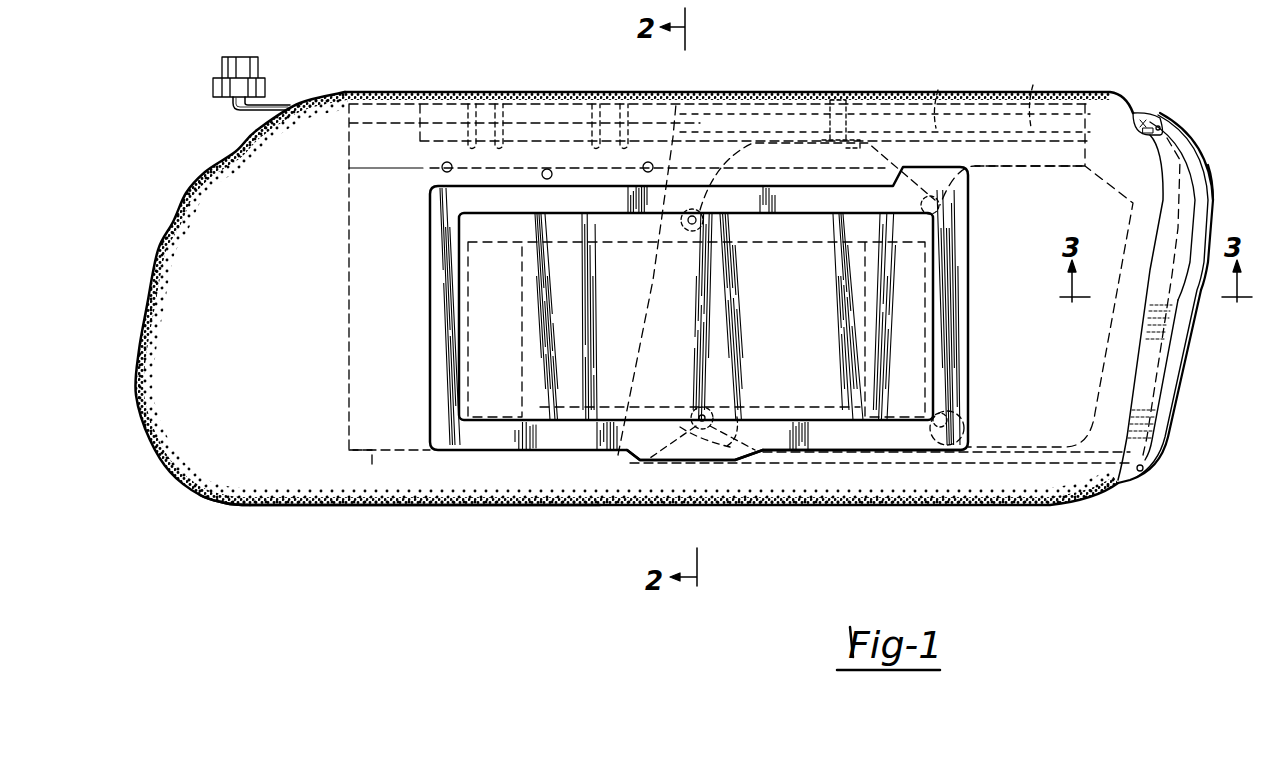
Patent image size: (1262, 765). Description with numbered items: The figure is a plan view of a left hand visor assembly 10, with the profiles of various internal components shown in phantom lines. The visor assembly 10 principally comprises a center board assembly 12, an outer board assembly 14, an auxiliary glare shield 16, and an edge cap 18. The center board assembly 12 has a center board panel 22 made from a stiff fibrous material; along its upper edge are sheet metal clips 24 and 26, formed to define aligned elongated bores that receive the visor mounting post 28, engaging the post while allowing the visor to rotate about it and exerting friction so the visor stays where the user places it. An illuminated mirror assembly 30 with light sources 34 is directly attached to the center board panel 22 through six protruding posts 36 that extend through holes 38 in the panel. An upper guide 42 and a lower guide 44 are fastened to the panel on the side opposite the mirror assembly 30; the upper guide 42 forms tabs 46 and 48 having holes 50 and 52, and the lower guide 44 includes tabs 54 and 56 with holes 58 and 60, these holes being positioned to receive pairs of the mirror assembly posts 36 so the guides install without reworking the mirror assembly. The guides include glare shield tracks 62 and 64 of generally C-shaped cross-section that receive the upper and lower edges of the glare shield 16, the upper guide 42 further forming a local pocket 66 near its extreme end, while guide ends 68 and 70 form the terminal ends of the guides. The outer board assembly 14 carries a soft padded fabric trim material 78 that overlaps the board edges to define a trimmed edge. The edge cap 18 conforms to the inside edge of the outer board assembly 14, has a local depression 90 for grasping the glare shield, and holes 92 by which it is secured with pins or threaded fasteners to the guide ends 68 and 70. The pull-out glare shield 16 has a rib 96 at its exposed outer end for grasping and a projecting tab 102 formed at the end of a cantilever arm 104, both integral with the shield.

The visor assembly 10 is at (880, 70).
The center board assembly 12 is at (407, 452).
The outer board assembly 14 is at (315, 508).
The auxiliary glare shield 16 is at (1182, 358).
The edge cap 18 is at (1177, 128).
The center board panel 22 is at (373, 470).
The sheet metal clip 24 is at (528, 91).
The sheet metal clip 26 is at (763, 58).
The visor mounting post 28 is at (287, 106).
The illuminated mirror assembly 30 is at (515, 452).
The light sources 34 is at (532, 440).
The protruding posts 36 is at (905, 455).
The holes 38 is at (460, 212).
The upper guide 42 is at (934, 88).
The lower guide 44 is at (737, 465).
The tab 46 is at (712, 226).
The tab 48 is at (950, 220).
The hole 50 is at (705, 203).
The hole 52 is at (948, 194).
The tab 54 is at (743, 408).
The tab 56 is at (978, 433).
The hole 58 is at (703, 406).
The hole 60 is at (953, 415).
The glare shield track 62 is at (1033, 85).
The glare shield track 64 is at (1042, 475).
The local pocket 66 is at (1147, 112).
The guide end 68 is at (1183, 147).
The guide end 70 is at (1173, 438).
The padded fabric trim material 78 is at (248, 490).
The local depression 90 is at (1173, 313).
The holes 92 is at (1143, 471).
The rib 96 is at (1210, 200).
The projecting tab 102 is at (848, 90).
The cantilever arm 104 is at (830, 87).